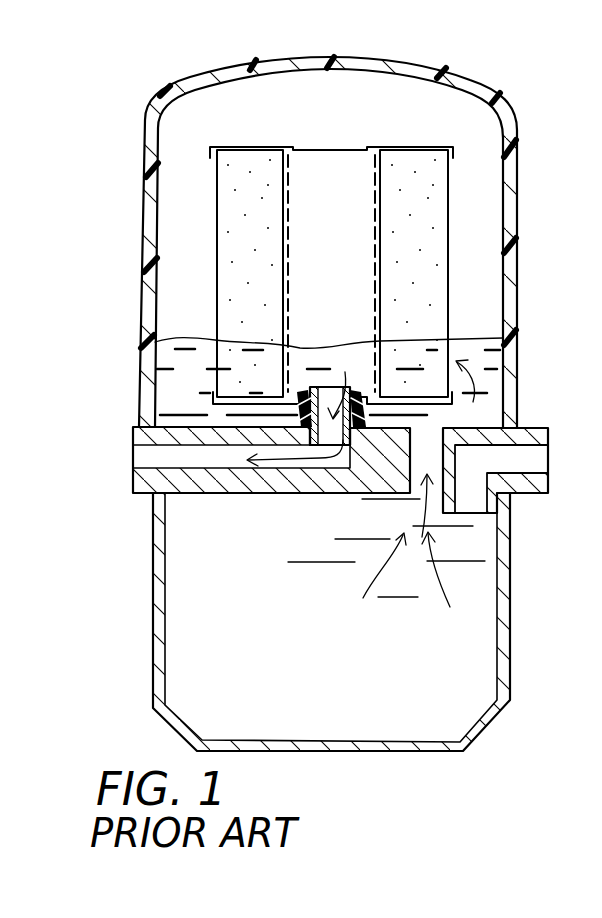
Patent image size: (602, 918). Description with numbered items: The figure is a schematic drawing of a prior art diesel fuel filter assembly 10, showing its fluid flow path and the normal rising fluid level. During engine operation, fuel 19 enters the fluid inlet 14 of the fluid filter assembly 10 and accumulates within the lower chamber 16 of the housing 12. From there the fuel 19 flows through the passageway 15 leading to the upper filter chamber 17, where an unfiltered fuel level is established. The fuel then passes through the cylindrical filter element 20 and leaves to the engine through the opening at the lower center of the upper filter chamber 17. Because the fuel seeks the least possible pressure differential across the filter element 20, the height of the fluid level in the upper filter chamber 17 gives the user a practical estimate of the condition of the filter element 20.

The fluid filter assembly 10 is at (586, 84).
The housing 12 is at (520, 303).
The fluid inlet 14 is at (517, 473).
The passageway 15 is at (430, 440).
The lower chamber 16 is at (478, 643).
The upper filter chamber 17 is at (482, 184).
The fuel 19 is at (478, 545).
The filter element 20 is at (432, 243).